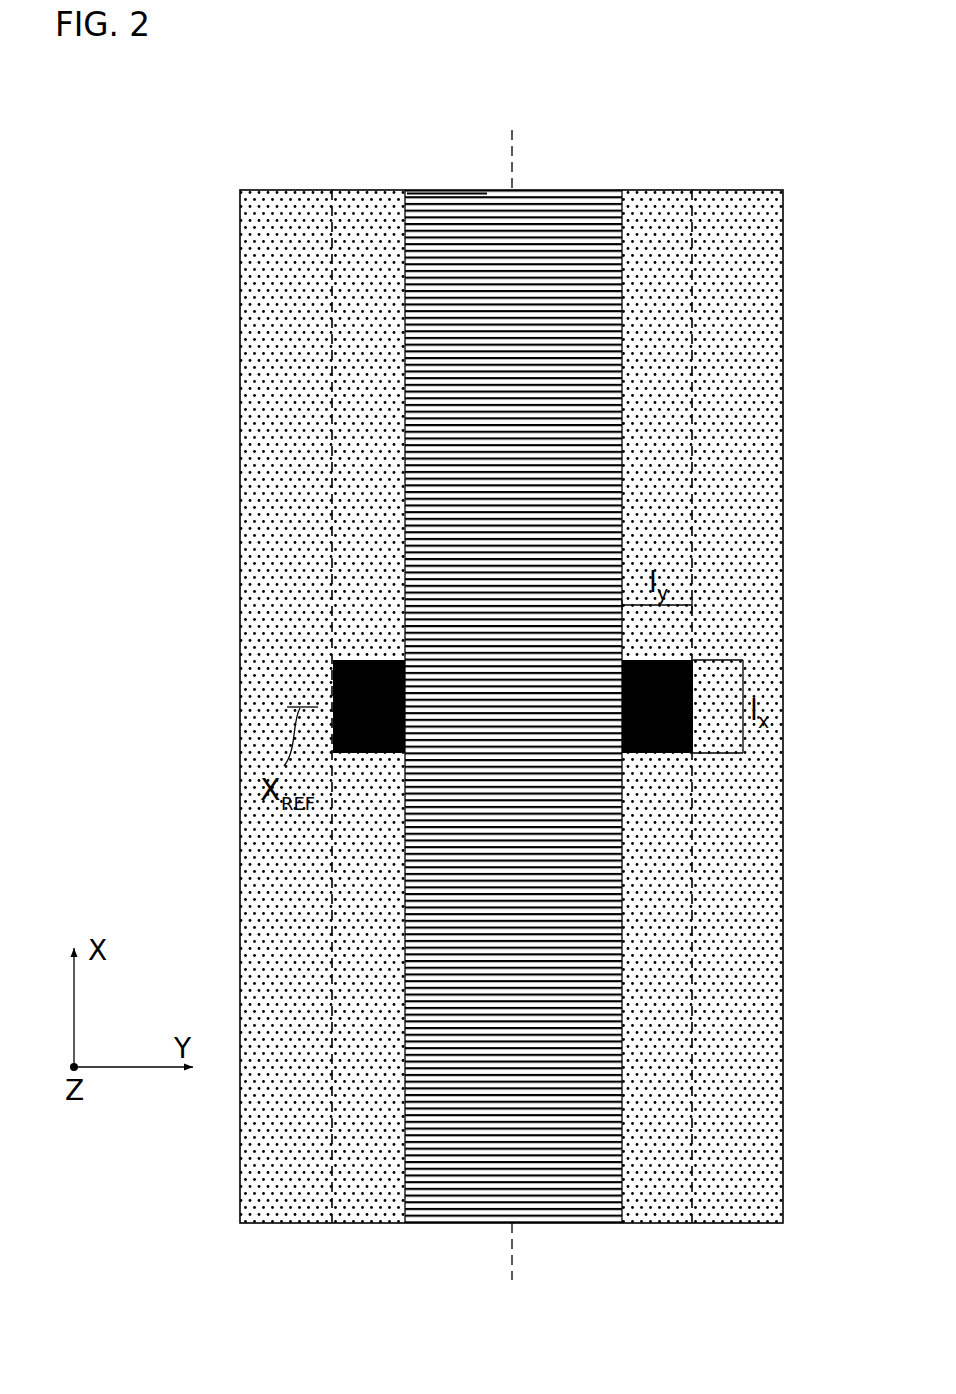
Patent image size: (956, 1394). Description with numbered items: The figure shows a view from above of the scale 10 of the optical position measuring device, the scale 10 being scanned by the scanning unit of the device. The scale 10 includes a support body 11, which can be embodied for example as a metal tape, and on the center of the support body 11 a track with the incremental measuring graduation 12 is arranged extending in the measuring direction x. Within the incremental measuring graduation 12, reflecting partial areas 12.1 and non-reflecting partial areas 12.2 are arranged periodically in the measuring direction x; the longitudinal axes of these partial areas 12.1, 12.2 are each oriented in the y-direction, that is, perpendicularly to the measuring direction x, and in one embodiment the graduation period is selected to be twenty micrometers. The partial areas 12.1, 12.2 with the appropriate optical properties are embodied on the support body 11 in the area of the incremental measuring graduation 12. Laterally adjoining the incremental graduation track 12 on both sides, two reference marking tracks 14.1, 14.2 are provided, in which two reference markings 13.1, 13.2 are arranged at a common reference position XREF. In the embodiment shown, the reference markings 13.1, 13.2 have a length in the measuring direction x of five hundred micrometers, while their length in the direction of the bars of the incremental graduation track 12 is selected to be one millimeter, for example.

The scale 10 is at (228, 1168).
The support body 11 is at (288, 928).
The incremental measuring graduation 12 is at (577, 190).
The reflecting partial areas 12.1 is at (427, 190).
The non-reflecting partial areas 12.2 is at (457, 190).
The first reference marking 13.1 is at (372, 660).
The second reference marking 13.2 is at (652, 753).
The first reference marking track 14.1 is at (363, 1230).
The second reference marking track 14.2 is at (660, 1233).